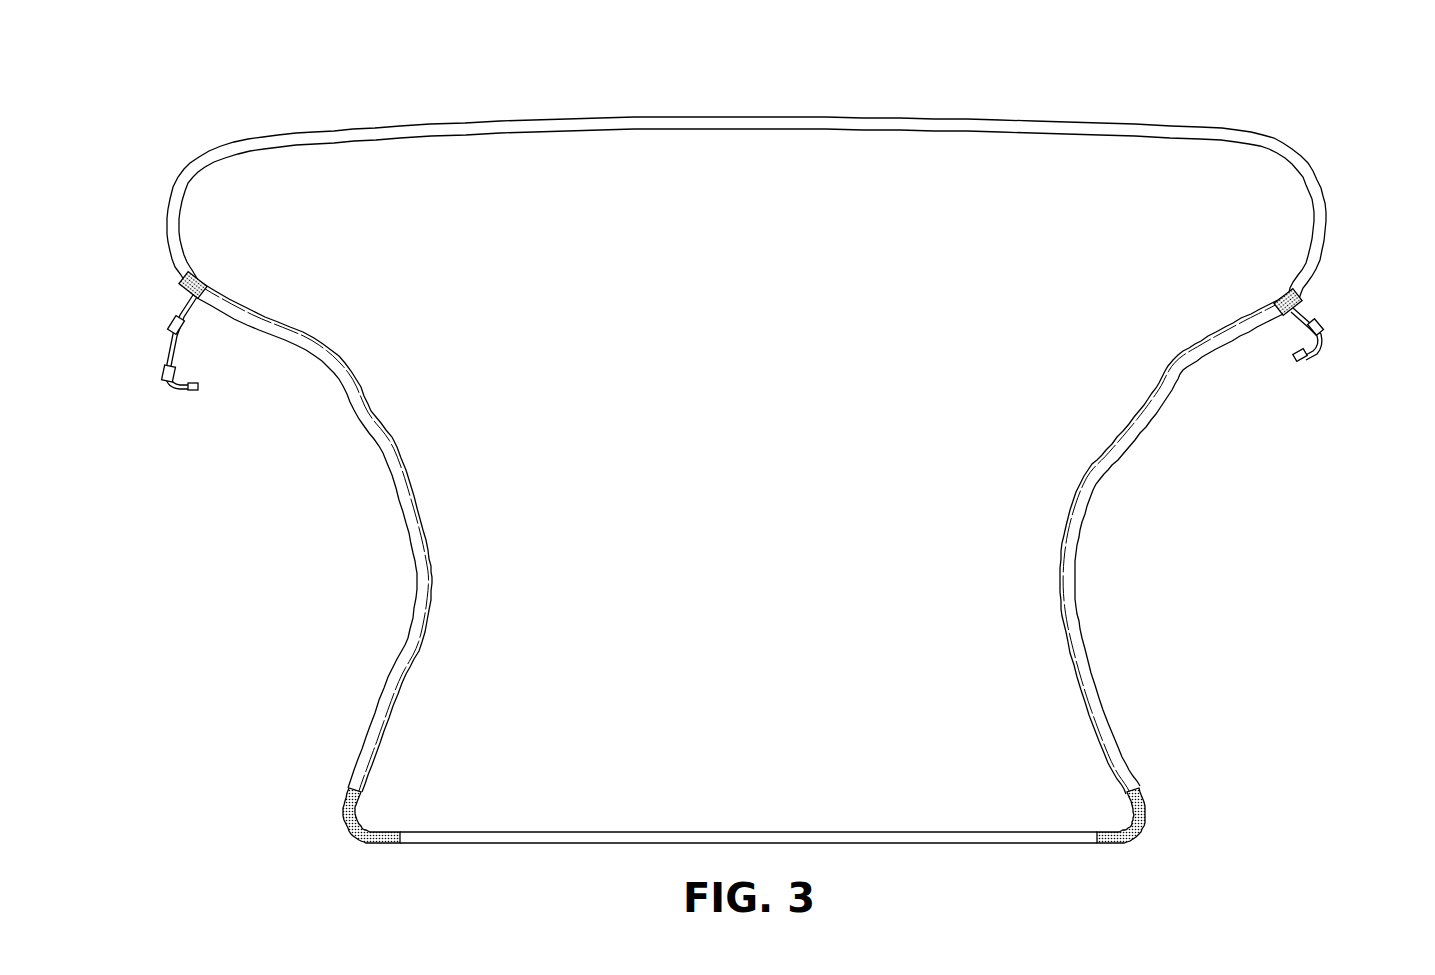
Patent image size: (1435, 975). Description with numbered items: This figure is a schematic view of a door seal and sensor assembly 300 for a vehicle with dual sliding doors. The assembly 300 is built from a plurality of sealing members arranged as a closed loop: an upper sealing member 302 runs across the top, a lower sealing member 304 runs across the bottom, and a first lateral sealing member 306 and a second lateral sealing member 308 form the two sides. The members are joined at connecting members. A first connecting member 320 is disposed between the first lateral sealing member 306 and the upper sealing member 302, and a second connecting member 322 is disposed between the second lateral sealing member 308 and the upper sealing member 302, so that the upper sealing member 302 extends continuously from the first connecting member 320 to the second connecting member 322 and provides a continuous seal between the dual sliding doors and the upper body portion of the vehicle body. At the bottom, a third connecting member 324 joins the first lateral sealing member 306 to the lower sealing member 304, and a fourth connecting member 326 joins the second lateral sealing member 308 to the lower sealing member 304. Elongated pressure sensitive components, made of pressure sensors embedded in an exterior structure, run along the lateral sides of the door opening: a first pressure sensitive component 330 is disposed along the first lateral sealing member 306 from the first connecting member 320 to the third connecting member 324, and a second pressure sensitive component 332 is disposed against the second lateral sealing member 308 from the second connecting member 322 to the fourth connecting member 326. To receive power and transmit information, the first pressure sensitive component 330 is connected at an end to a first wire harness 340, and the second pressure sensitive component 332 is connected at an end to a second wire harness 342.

The door seal and sensor assembly 300 is at (482, 101).
The upper sealing member 302 is at (781, 130).
The lower sealing member 304 is at (787, 830).
The first lateral sealing member 306 is at (405, 518).
The second lateral sealing member 308 is at (1081, 563).
The first connecting member 320 is at (183, 290).
The second connecting member 322 is at (1300, 306).
The third connecting member 324 is at (343, 827).
The fourth connecting member 326 is at (1148, 823).
The first pressure sensitive component 330 is at (376, 417).
The second pressure sensitive component 332 is at (1112, 457).
The first wire harness 340 is at (170, 345).
The second wire harness 342 is at (1327, 344).